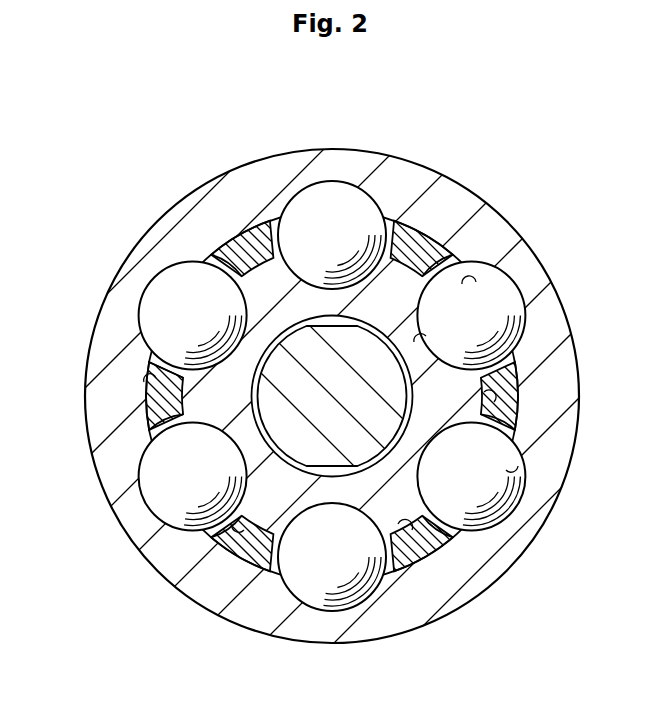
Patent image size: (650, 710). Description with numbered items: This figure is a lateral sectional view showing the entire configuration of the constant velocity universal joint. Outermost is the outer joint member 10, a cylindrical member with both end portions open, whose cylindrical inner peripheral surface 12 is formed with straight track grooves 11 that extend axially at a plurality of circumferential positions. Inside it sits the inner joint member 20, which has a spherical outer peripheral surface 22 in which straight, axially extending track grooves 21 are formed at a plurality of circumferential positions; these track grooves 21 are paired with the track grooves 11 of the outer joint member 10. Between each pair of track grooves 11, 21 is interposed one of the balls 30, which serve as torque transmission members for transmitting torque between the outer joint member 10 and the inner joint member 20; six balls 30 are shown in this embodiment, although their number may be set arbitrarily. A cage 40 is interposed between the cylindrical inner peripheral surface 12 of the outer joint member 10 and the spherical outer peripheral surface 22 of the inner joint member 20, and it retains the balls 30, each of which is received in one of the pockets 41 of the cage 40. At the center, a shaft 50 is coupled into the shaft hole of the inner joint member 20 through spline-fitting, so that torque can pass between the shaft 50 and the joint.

The outer joint member 10 is at (480, 189).
The track grooves 11 is at (517, 470).
The cylindrical inner peripheral surface 12 is at (150, 375).
The inner joint member 20 is at (254, 502).
The track grooves 21 is at (402, 352).
The spherical outer peripheral surface 22 is at (402, 525).
The balls 30 is at (305, 208).
The cage 40 is at (497, 398).
The pockets 41 is at (467, 282).
The shaft 50 is at (298, 427).